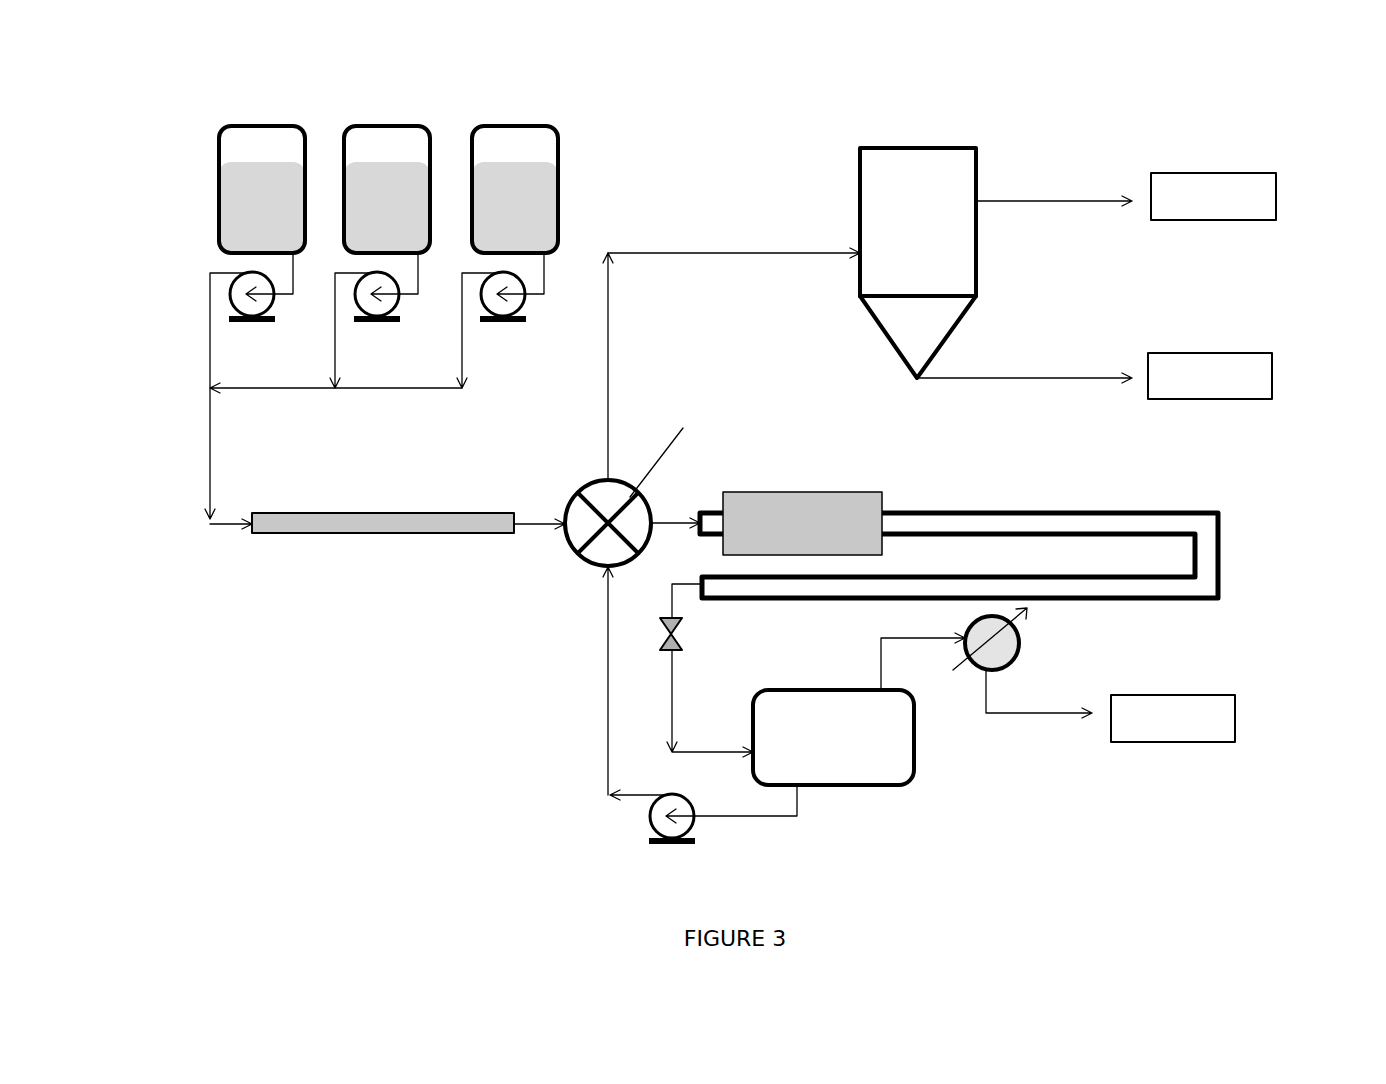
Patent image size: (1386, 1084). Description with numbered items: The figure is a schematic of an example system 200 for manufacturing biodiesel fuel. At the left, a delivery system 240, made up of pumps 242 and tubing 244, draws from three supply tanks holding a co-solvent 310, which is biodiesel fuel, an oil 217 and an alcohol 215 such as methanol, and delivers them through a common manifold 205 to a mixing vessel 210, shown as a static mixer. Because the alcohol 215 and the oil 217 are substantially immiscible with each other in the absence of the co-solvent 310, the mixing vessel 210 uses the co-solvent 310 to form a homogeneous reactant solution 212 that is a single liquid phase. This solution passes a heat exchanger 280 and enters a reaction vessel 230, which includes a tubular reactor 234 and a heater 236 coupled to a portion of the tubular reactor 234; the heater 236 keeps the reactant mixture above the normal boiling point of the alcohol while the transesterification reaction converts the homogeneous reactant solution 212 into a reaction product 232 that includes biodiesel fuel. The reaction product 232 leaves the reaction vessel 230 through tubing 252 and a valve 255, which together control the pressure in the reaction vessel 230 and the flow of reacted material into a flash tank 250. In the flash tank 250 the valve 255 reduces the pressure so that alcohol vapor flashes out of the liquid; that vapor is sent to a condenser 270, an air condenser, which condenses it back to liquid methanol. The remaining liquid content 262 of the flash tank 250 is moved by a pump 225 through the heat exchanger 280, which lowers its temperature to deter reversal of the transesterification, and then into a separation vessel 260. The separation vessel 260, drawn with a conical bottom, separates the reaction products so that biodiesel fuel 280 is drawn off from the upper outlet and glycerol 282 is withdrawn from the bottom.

The system 200 is at (1240, 93).
The delivery system 240 is at (128, 233).
The co-solvent 310 is at (219, 197).
The oil 217 is at (428, 234).
The alcohol 215 is at (560, 238).
The pumps 242 is at (232, 300).
The tubing 244 is at (210, 378).
The manifold line 205 is at (345, 398).
The mixing vessel 210 is at (347, 535).
The homogeneous reactant solution 212 is at (360, 524).
The heat exchanger 280 is at (600, 560).
The reaction vessel 230 is at (1219, 513).
The tubular reactor 234 is at (1221, 557).
The heater 236 is at (800, 492).
The reaction product 232 is at (718, 588).
The valve 255 is at (686, 623).
The tubing 252 is at (676, 690).
The flash tank 250 is at (916, 763).
The remaining liquid content 262 is at (850, 777).
The pump 225 is at (651, 826).
The condenser 270 is at (1021, 637).
The separation vessel 260 is at (976, 148).
The glycerol 282 is at (1273, 365).